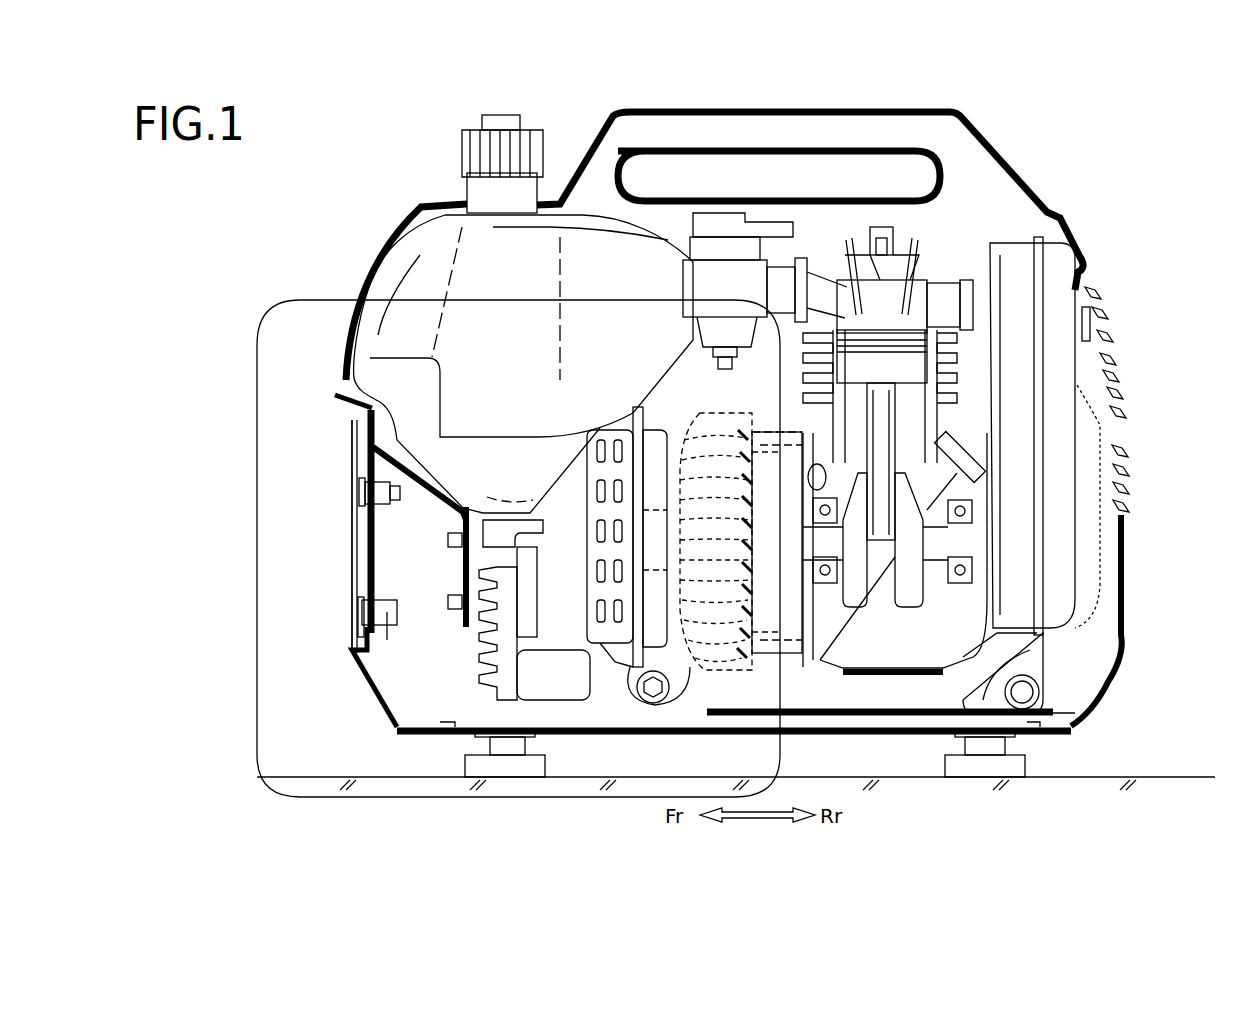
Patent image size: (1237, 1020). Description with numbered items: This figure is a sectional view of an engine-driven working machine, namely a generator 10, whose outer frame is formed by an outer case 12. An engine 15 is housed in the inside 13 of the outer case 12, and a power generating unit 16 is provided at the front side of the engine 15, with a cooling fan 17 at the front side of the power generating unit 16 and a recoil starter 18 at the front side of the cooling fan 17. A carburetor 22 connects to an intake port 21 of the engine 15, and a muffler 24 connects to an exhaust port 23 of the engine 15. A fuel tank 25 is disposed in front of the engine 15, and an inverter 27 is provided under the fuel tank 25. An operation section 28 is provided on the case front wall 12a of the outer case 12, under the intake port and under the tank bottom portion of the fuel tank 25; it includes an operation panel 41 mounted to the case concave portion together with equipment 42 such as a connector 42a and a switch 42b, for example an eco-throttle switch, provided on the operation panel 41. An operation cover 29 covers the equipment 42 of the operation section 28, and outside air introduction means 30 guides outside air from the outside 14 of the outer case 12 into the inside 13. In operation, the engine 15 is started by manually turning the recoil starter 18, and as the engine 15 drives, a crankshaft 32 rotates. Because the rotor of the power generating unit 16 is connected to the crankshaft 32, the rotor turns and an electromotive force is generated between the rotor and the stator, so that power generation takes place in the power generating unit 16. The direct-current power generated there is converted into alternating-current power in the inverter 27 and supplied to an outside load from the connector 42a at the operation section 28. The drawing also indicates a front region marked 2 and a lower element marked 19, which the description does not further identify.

The generator 10 is at (401, 128).
The outer case 12 is at (381, 222).
The case front wall 12a is at (350, 358).
The front region 2 is at (275, 310).
The outside 14 is at (238, 474).
The inside 13 is at (627, 379).
The fuel tank 25 is at (398, 290).
The carburetor 22 is at (685, 285).
The intake port 21 is at (810, 268).
The engine 15 is at (952, 251).
The exhaust port 23 is at (960, 313).
The muffler 24 is at (1090, 430).
The power generating unit 16 is at (770, 445).
The crankshaft 32 is at (817, 550).
The cooling fan 17 is at (727, 380).
The recoil starter 18 is at (593, 633).
The bottom plate 19 is at (620, 736).
The inverter 27 is at (497, 663).
The operation section 28 is at (362, 447).
The operation cover 29 is at (445, 500).
The outside air introduction means 30 is at (427, 458).
The operation panel 41 is at (360, 527).
The equipment 42 is at (358, 633).
The connector 42a is at (360, 612).
The switch 42b is at (362, 492).